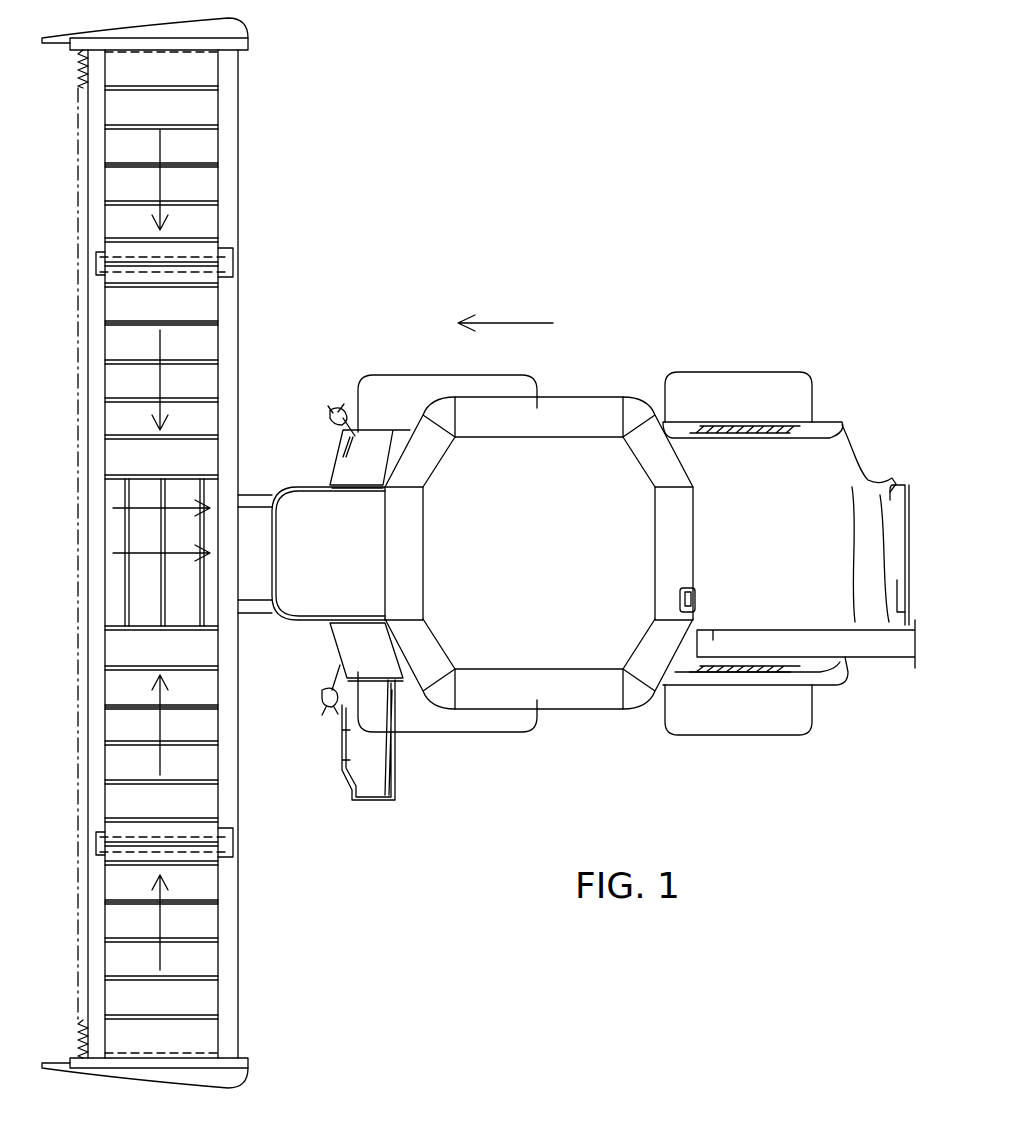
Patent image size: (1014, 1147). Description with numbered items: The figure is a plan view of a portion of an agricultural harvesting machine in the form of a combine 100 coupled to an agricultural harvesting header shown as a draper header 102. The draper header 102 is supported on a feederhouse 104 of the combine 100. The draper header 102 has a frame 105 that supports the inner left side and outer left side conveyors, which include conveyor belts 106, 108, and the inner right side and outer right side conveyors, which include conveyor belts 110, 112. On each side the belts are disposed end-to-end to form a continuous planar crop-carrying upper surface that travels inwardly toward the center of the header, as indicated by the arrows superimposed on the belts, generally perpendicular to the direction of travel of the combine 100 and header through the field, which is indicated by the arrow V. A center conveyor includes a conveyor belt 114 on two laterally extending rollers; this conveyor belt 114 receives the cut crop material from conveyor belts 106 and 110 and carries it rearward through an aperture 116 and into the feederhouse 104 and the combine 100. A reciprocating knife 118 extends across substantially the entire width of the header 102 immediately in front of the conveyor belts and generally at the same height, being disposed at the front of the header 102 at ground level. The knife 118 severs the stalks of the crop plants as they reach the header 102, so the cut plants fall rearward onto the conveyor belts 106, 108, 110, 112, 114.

The combine 100 is at (418, 264).
The draper header 102 is at (358, 210).
The feederhouse 104 is at (255, 505).
The frame 105 is at (235, 924).
The conveyor belt 106 is at (120, 722).
The conveyor belt 108 is at (120, 920).
The conveyor belt 110 is at (118, 345).
The conveyor belt 112 is at (115, 180).
The conveyor belt 114 is at (140, 530).
The aperture 116 is at (208, 508).
The reciprocating knife 118 is at (78, 1036).